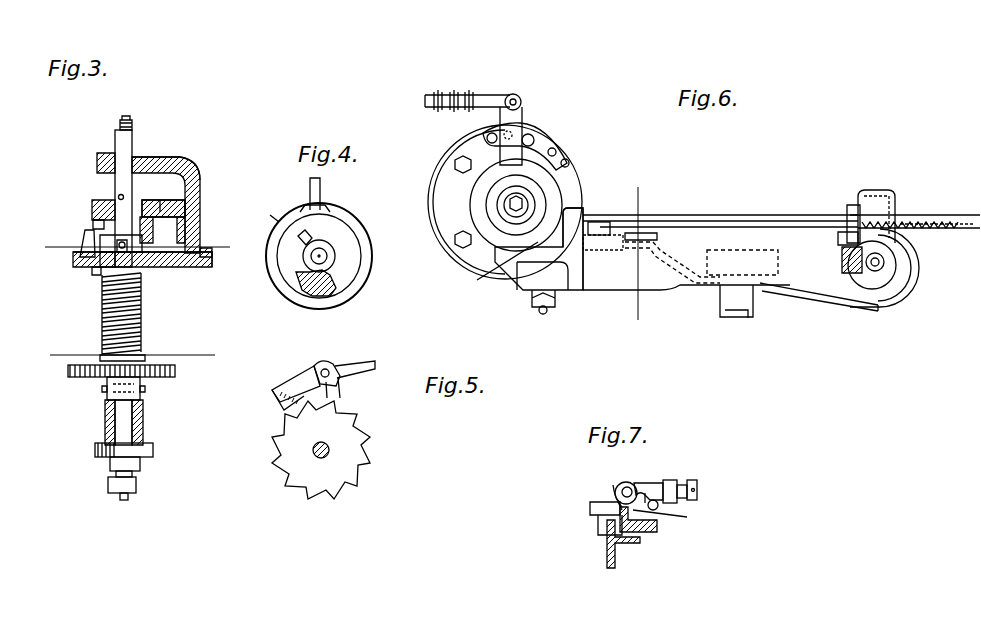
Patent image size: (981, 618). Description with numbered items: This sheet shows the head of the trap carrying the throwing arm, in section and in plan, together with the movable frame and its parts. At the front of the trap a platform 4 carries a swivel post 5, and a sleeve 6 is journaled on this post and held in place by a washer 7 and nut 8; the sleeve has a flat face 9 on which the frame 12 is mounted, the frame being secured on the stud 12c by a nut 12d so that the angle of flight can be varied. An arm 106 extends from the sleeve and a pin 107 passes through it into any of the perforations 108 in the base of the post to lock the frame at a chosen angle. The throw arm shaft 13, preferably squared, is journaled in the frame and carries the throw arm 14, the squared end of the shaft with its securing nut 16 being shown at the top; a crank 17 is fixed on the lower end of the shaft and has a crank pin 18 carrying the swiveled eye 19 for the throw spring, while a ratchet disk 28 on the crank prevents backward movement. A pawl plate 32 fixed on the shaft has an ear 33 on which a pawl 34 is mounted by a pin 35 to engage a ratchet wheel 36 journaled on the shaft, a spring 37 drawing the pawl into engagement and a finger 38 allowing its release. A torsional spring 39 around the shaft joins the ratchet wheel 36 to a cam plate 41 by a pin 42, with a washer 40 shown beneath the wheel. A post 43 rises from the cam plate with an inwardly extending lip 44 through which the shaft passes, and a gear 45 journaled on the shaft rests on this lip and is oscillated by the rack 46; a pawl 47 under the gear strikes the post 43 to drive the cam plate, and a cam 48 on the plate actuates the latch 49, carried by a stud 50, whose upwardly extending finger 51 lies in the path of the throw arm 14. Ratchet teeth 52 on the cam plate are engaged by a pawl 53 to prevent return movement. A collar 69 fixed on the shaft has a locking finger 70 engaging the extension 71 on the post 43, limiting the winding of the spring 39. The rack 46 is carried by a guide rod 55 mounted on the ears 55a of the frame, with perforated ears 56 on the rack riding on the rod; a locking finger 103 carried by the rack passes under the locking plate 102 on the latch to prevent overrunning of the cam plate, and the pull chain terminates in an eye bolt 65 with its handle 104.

In FIG. 3, the platform 4 is at (136, 246).
In FIG. 3, the swivel post 5 is at (133, 353).
In FIG. 6, the swivel post 5 is at (500, 152).
In FIG. 6, the sleeve 6 is at (483, 220).
In FIG. 6, the washer 7 is at (505, 203).
In FIG. 6, the nut 8 is at (510, 197).
In FIG. 6, the flat face 9 is at (505, 215).
In FIG. 3, the frame 12 is at (98, 162).
In FIG. 6, the frame 12 is at (598, 285).
In FIG. 7, the frame 12 is at (607, 547).
In FIG. 6, the stud 12c is at (543, 314).
In FIG. 6, the nut 12d is at (532, 300).
In FIG. 3, the throw arm shaft 13 is at (128, 418).
In FIG. 5, the throw arm shaft 13 is at (329, 448).
In FIG. 6, the throw arm 14 is at (842, 262).
In FIG. 3, the spindle 16 is at (130, 138).
In FIG. 3, the crank 17 is at (110, 466).
In FIG. 3, the crank pin 18 is at (124, 500).
In FIG. 3, the swiveled eye 19 is at (136, 487).
In FIG. 3, the ratchet disk 28 is at (95, 450).
In FIG. 3, the pawl plate 32 is at (107, 395).
In FIG. 5, the ear 33 is at (300, 370).
In FIG. 5, the pawl 34 is at (320, 364).
In FIG. 5, the pin 35 is at (340, 380).
In FIG. 3, the ratchet wheel 36 is at (70, 375).
In FIG. 5, the ratchet wheel 36 is at (321, 450).
In FIG. 5, the spring 37 is at (272, 394).
In FIG. 5, the finger 38 is at (372, 363).
In FIG. 3, the torsional spring 39 is at (141, 308).
In FIG. 3, the washer 40 is at (140, 357).
In FIG. 3, the cam plate 41 is at (168, 268).
In FIG. 4, the cam plate 41 is at (372, 250).
In FIG. 6, the cam plate 41 is at (908, 303).
In FIG. 3, the pin 42 is at (106, 268).
In FIG. 4, the post 43 is at (325, 288).
In FIG. 3, the lip 44 is at (142, 242).
In FIG. 3, the gear 45 is at (92, 205).
In FIG. 3, the rack 46 is at (170, 205).
In FIG. 6, the rack 46 is at (940, 216).
In FIG. 7, the rack 46 is at (672, 480).
In FIG. 3, the pawl 47 is at (93, 223).
In FIG. 3, the cam 48 is at (85, 240).
In FIG. 4, the cam 48 is at (279, 222).
In FIG. 6, the latch 49 is at (800, 303).
In FIG. 7, the latch 49 is at (653, 532).
In FIG. 6, the stud 50 is at (735, 318).
In FIG. 6, the finger 51 is at (600, 230).
In FIG. 7, the finger 51 is at (590, 508).
In FIG. 4, the ratchet teeth 52 is at (325, 208).
In FIG. 4, the pawl 53 is at (320, 182).
In FIG. 6, the guide rod 55 is at (752, 212).
In FIG. 3, the ears 55a is at (192, 162).
In FIG. 6, the ears 55a is at (573, 210).
In FIG. 6, the perforated ears 56 is at (848, 228).
In FIG. 7, the perforated ears 56 is at (650, 488).
In FIG. 7, the eye bolt 65 is at (628, 482).
In FIG. 3, the collar 69 is at (94, 275).
In FIG. 4, the collar 69 is at (330, 248).
In FIG. 3, the locking finger 70 is at (117, 245).
In FIG. 4, the locking finger 70 is at (300, 237).
In FIG. 4, the extension 71 is at (300, 280).
In FIG. 6, the locking plate 102 is at (648, 237).
In FIG. 7, the locking plate 102 is at (613, 485).
In FIG. 6, the locking finger 103 is at (840, 225).
In FIG. 7, the locking finger 103 is at (679, 514).
In FIG. 6, the handle 104 is at (484, 95).
In FIG. 6, the arm 106 is at (522, 128).
In FIG. 6, the pin 107 is at (535, 140).
In FIG. 6, the perforations 108 is at (570, 163).